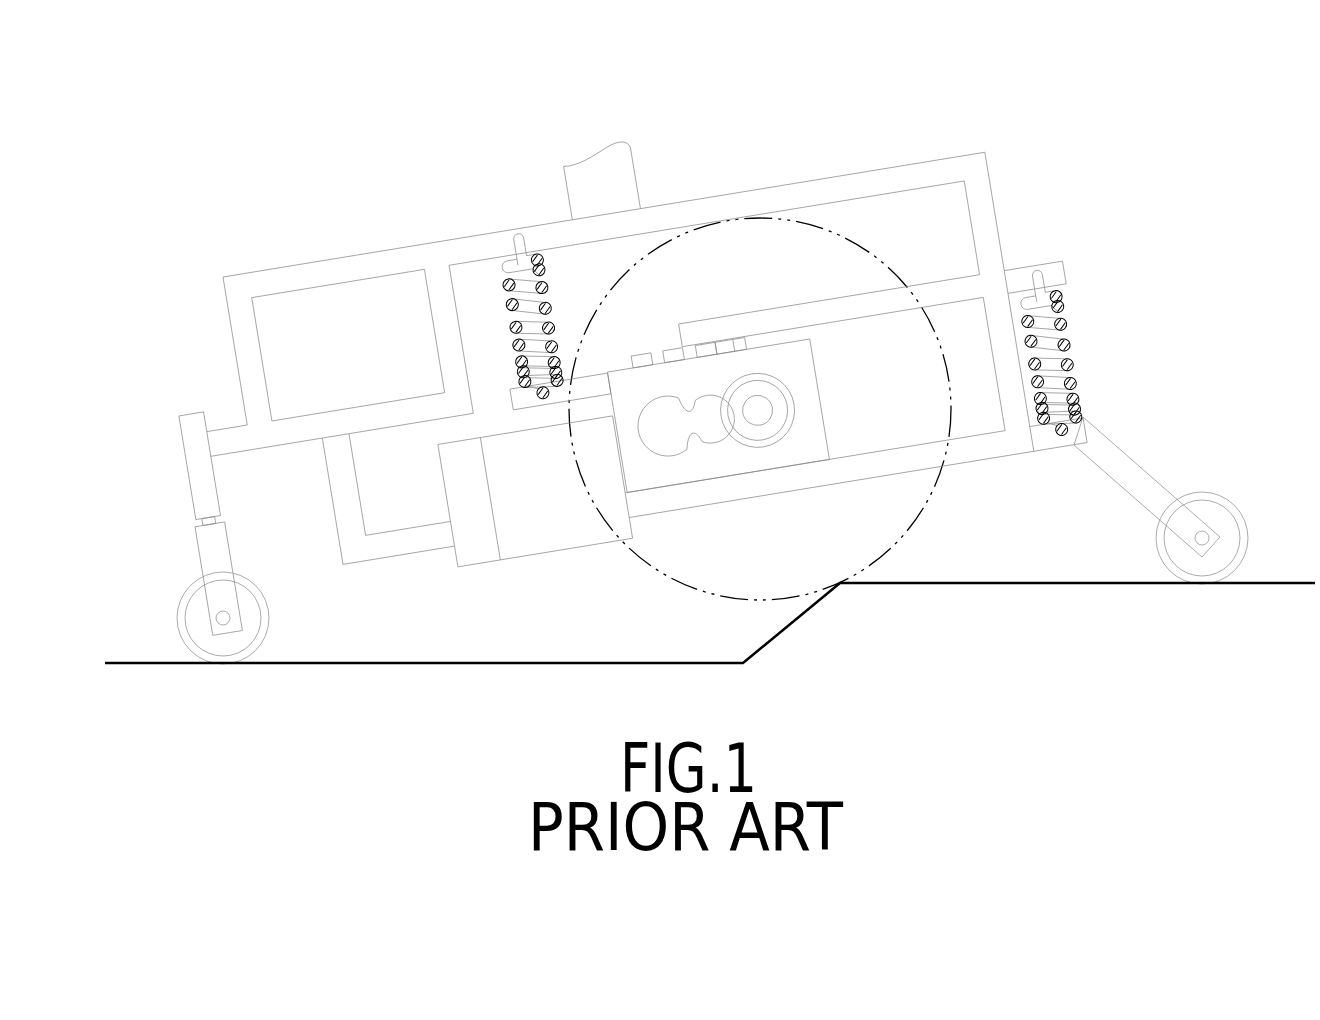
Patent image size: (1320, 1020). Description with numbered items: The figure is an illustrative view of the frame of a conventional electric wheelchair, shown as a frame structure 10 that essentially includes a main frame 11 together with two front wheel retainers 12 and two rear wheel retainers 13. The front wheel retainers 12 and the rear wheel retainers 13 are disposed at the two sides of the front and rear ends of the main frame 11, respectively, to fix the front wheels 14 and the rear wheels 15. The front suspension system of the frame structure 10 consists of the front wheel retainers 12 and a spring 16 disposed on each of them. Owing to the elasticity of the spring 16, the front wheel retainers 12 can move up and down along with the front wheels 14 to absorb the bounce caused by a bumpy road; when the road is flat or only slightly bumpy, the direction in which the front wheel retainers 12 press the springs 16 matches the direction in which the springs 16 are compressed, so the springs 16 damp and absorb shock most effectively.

The frame structure 10 is at (692, 131).
The main frame 11 is at (948, 173).
The front wheel retainer 12 is at (1115, 463).
The rear wheel retainer 13 is at (193, 477).
The front wheel 14 is at (1215, 517).
The rear wheel 15 is at (200, 613).
The spring 16 is at (1062, 322).